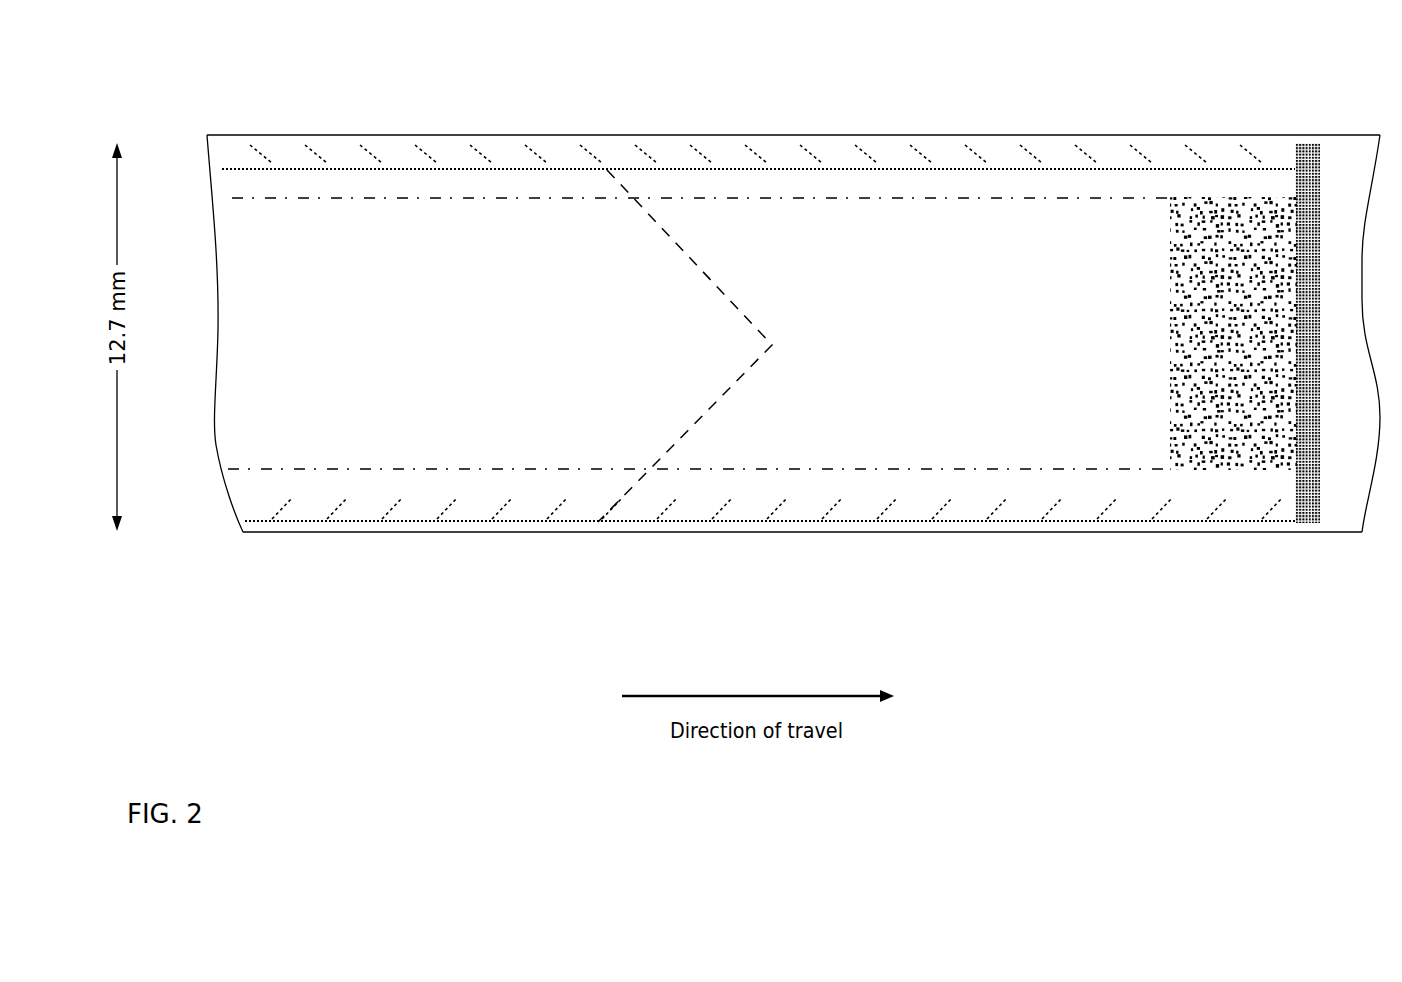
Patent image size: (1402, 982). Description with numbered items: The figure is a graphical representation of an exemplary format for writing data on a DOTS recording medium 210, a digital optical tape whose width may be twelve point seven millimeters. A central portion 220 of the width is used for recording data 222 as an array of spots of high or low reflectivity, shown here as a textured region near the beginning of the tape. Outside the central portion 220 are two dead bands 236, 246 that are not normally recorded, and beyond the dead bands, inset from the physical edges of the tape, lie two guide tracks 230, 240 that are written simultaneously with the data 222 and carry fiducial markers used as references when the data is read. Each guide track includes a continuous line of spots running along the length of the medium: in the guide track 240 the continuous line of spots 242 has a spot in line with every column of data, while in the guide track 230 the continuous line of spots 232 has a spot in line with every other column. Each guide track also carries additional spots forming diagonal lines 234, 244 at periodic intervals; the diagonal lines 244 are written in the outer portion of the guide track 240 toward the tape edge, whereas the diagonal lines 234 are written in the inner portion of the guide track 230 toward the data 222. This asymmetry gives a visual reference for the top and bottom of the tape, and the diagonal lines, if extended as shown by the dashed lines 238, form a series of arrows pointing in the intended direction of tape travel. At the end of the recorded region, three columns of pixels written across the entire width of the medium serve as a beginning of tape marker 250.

The DOTS recording medium 210 is at (503, 135).
The central portion 220 is at (207, 200).
The data 222 is at (1153, 279).
The guide track 230 is at (207, 499).
The continuous line of spots 232 is at (890, 520).
The diagonal lines 234 is at (1048, 502).
The dead band 236 is at (207, 470).
The dashed lines 238 is at (707, 408).
The guide track 240 is at (207, 137).
The continuous line of spots 242 is at (843, 168).
The diagonal lines 244 is at (1081, 160).
The dead band 246 is at (207, 170).
The beginning of tape marker 250 is at (1310, 140).